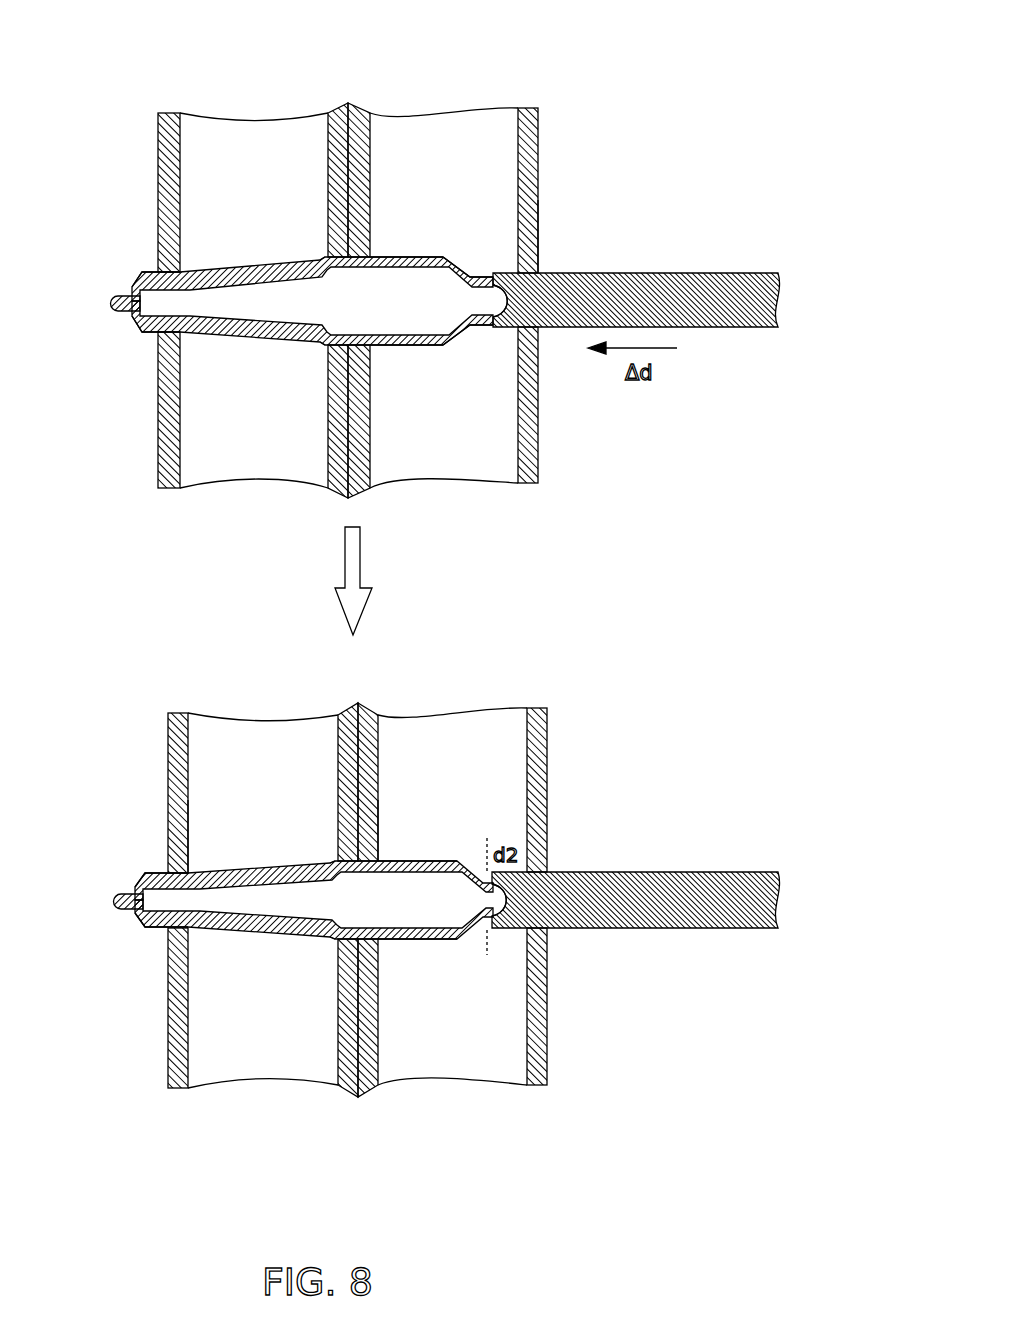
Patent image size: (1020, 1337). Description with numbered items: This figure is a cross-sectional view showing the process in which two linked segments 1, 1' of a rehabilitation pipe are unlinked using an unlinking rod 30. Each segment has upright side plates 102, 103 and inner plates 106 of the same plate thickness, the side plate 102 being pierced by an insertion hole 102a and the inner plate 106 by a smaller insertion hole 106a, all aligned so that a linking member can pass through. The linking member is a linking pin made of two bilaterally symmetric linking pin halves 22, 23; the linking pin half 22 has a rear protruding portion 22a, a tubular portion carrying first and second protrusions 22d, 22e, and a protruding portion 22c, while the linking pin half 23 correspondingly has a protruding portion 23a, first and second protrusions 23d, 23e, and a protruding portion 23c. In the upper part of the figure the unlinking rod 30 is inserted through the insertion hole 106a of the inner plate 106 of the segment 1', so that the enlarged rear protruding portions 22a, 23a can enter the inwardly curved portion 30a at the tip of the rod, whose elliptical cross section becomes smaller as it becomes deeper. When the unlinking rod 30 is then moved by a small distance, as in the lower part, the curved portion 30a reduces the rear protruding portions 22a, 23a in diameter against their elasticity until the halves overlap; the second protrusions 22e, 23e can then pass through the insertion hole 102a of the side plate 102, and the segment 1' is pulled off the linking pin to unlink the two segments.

The segment 1 is at (259, 553).
The segment 1' is at (448, 549).
The linking pin half 22 is at (442, 198).
The protruding portion 22a is at (470, 277).
The protruding portion 22c is at (152, 272).
The first protrusion 22d is at (322, 257).
The second protrusion 22e is at (372, 257).
The linking pin half 23 is at (458, 402).
The protruding portion 23a is at (470, 327).
The protruding portion 23c is at (152, 333).
The first protrusion 23d is at (320, 345).
The second protrusion 23e is at (378, 348).
The unlinking rod 30 is at (667, 272).
The curved portion 30a is at (500, 290).
The side plate 102 is at (363, 108).
The insertion hole 102a is at (379, 860).
The side plate 103 is at (330, 113).
The inner plate 106 is at (158, 198).
The insertion hole 106a is at (543, 272).